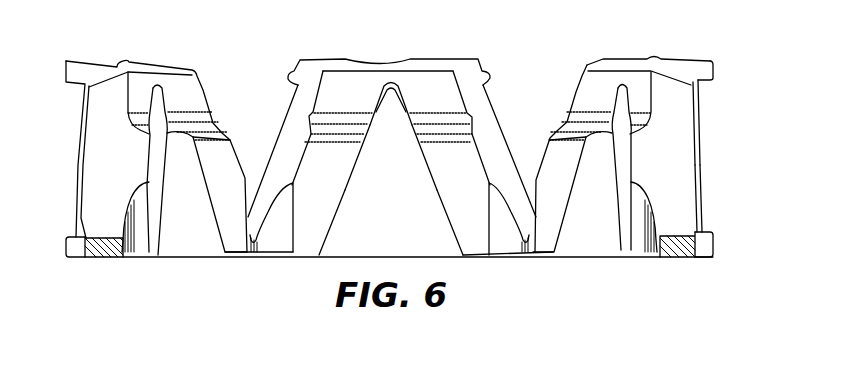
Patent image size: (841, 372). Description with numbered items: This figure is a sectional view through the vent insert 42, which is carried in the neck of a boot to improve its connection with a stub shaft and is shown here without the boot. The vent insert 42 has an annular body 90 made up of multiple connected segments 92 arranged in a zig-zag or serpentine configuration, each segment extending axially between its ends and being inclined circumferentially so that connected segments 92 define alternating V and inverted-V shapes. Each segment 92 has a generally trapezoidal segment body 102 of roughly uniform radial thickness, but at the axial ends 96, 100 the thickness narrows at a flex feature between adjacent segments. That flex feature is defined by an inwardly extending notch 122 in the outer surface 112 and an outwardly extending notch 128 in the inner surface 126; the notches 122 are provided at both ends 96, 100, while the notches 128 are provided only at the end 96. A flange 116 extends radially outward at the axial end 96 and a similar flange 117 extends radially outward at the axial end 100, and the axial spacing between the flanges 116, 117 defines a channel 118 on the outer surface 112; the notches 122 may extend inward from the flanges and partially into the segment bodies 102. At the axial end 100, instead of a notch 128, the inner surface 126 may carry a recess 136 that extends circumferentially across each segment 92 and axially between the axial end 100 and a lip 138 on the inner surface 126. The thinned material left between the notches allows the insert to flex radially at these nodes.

The vent insert 42 is at (98, 299).
The annular body 90 is at (718, 145).
The segments 92 is at (440, 148).
The axial end 96 is at (668, 258).
The axial end 100 is at (627, 64).
The segment body 102 is at (447, 175).
The outer surface 112 is at (704, 186).
The flange 116 is at (715, 243).
The flange 117 is at (713, 69).
The channel 118 is at (78, 143).
The notch 122 is at (402, 62).
The inner surface 126 is at (460, 200).
The notch 128 is at (275, 254).
The recess 136 is at (187, 89).
The lip 138 is at (212, 124).